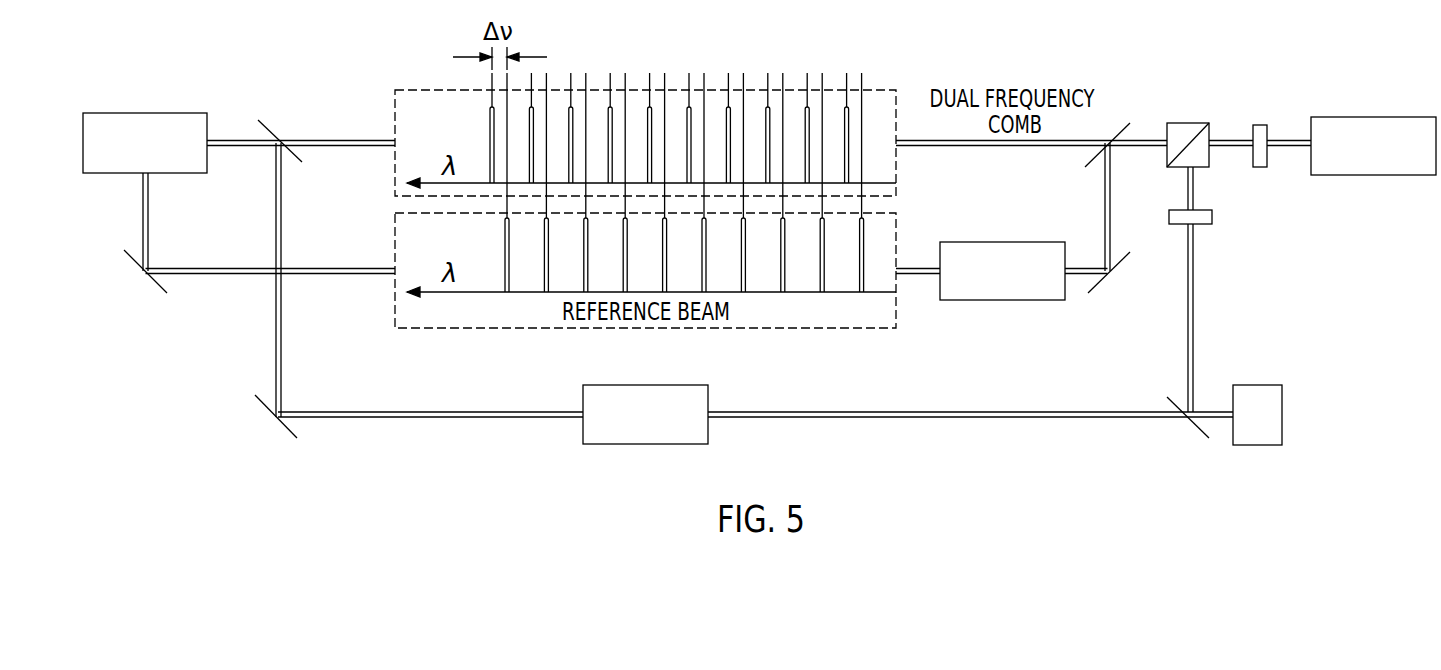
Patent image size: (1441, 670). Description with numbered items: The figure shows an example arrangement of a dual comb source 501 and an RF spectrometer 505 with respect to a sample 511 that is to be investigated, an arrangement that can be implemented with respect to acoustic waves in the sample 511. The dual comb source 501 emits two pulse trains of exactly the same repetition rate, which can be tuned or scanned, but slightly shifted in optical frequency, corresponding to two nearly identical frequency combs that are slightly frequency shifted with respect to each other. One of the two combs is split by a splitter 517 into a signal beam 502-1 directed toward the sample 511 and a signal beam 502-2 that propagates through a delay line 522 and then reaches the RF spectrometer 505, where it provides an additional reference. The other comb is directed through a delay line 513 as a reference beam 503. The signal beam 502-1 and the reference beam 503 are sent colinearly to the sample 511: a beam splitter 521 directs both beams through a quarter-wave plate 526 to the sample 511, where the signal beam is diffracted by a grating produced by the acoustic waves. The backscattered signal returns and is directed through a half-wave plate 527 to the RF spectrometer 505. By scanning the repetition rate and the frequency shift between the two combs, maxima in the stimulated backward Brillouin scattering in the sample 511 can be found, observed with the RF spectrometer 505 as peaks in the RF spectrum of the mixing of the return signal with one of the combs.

The dual comb source 501 is at (148, 113).
The signal beam 502-1 is at (305, 138).
The signal beam 502-2 is at (307, 412).
The reference beam 503 is at (305, 267).
The RF spectrometer 505 is at (1282, 415).
The sample 511 is at (1375, 116).
The delay line 513 is at (1002, 242).
The splitter 517 is at (280, 138).
The beam splitter 521 is at (1187, 123).
The delay line 522 is at (645, 385).
The quarter-wave plate 526 is at (1258, 125).
The half-wave plate 527 is at (1212, 217).